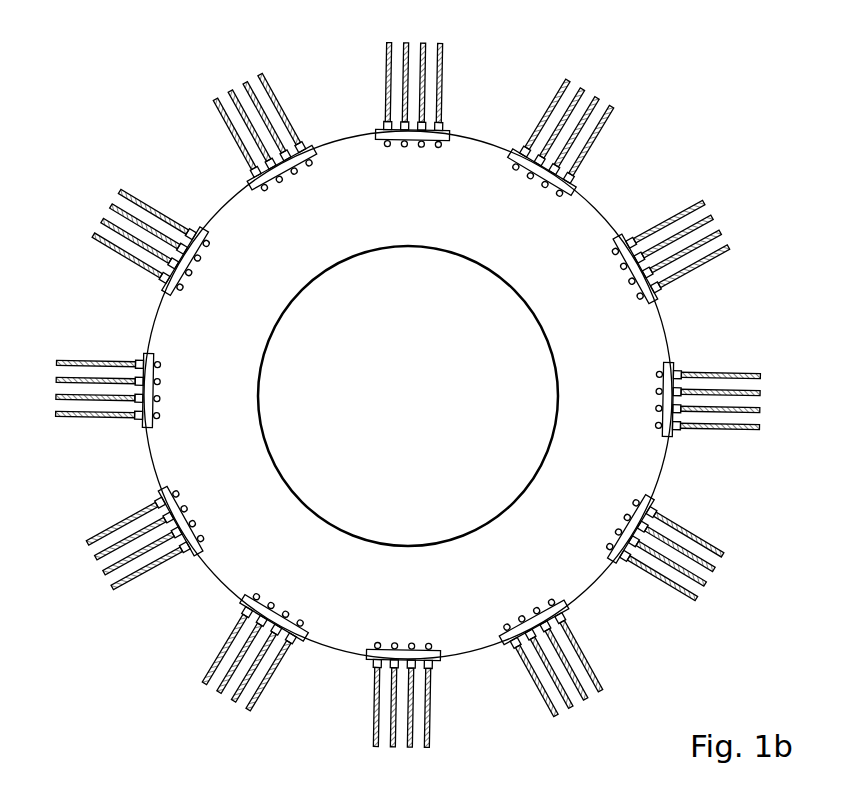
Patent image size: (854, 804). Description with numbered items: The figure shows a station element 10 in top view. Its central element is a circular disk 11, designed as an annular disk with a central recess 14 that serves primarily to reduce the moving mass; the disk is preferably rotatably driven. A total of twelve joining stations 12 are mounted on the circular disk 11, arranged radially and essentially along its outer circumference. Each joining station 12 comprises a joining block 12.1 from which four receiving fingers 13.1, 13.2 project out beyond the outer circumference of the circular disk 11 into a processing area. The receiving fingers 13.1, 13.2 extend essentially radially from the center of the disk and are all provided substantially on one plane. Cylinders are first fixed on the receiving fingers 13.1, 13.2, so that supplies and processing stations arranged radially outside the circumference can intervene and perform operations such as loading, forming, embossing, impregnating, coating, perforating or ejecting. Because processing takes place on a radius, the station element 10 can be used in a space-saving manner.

The station element 10 is at (156, 156).
The circular disk 11 is at (472, 166).
The joining station 12 is at (401, 75).
The joining block 12.1 is at (382, 142).
The receiving finger 13.1 is at (389, 86).
The receiving finger 13.2 is at (440, 86).
The central recess 14 is at (418, 411).